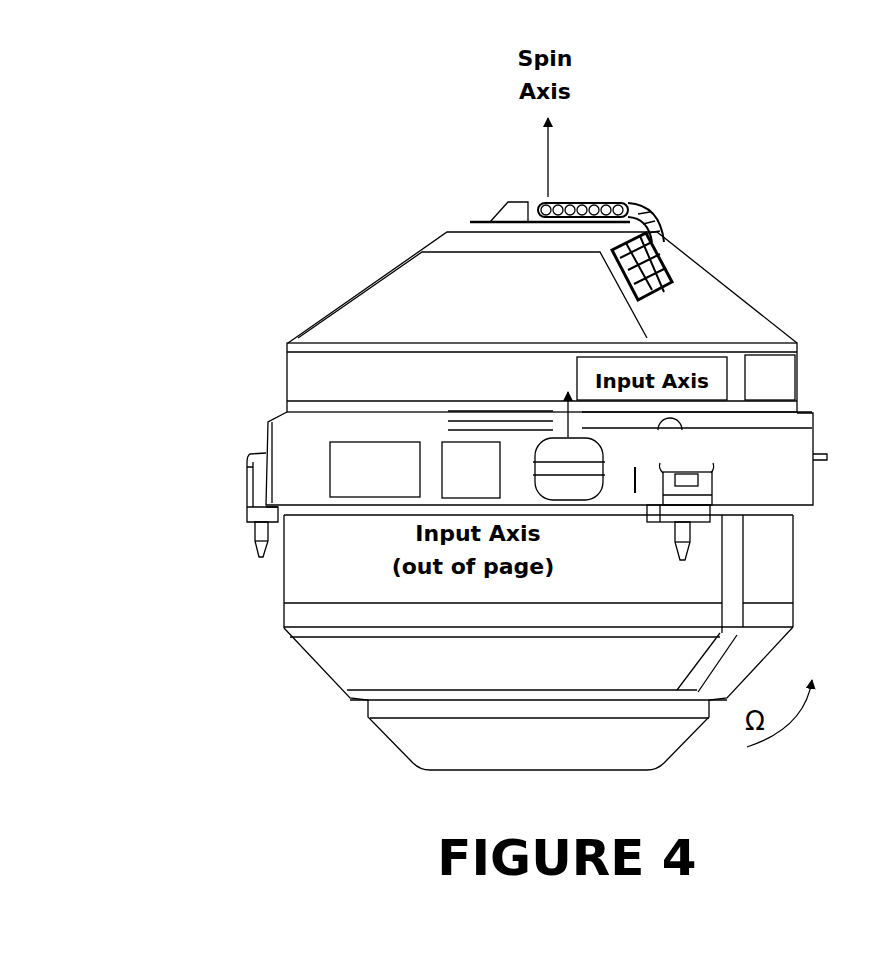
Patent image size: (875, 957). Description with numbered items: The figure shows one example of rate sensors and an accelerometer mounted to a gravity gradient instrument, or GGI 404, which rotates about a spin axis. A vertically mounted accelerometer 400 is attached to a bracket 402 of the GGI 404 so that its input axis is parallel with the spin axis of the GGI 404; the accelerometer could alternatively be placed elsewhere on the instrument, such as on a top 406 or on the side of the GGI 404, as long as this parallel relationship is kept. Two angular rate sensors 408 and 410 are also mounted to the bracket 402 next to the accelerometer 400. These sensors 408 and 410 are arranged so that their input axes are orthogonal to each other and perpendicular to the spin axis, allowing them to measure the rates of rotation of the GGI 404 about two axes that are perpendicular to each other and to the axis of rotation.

The vertically mounted accelerometer 400 is at (608, 454).
The bracket 402 is at (260, 435).
The GGI 404 is at (276, 205).
The top 406 is at (574, 188).
The angular rate sensor 408 is at (287, 472).
The angular rate sensor 410 is at (434, 414).